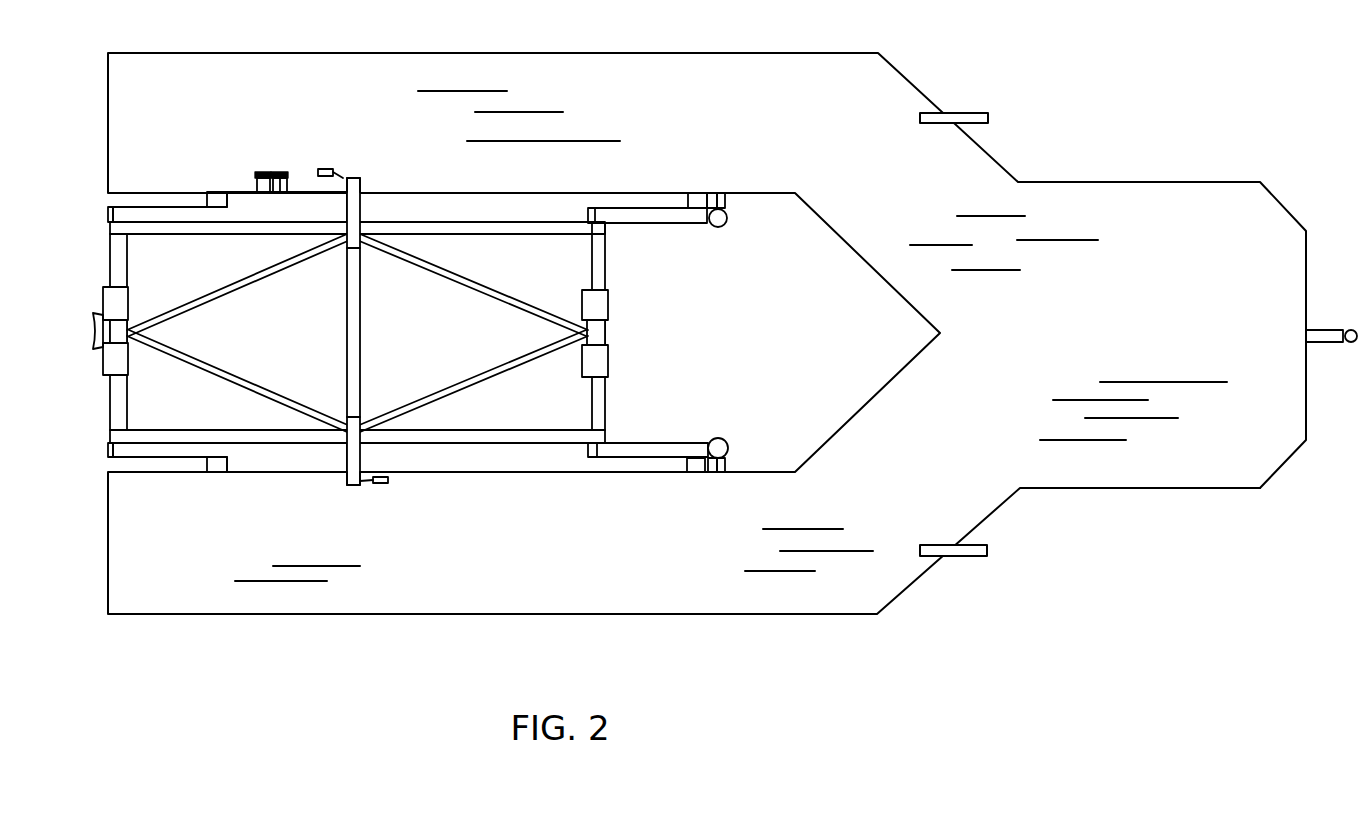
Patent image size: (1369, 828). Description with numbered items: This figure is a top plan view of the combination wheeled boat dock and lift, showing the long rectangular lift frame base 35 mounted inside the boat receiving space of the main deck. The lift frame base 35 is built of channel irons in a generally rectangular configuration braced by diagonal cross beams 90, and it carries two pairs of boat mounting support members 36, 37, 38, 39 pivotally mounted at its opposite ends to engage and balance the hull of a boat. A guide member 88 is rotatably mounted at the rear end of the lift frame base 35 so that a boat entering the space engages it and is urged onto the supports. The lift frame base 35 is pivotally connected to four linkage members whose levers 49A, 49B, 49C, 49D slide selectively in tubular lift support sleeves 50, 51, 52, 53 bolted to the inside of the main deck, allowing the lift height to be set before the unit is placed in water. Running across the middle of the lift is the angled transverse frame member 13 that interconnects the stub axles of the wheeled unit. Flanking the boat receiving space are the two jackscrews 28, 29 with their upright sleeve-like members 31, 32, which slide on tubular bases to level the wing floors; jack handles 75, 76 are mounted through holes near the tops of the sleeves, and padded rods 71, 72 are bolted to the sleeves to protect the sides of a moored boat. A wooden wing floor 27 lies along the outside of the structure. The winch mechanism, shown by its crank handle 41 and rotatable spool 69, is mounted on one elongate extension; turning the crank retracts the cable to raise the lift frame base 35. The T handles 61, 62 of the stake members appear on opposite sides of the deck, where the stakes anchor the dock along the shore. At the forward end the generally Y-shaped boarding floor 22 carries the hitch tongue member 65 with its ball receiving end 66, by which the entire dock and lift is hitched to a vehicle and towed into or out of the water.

The transverse frame member 13 is at (347, 323).
The Y-shaped floor 22 is at (1220, 460).
The wing floor 27 is at (497, 592).
The jackscrew 28 is at (343, 485).
The jackscrew 29 is at (367, 178).
The sleeve-like member 31 is at (362, 457).
The sleeve-like member 32 is at (362, 207).
The lift frame base 35 is at (357, 326).
The boat mounting support member 36 is at (103, 297).
The boat mounting support member 37 is at (103, 362).
The boat mounting support member 38 is at (610, 360).
The boat mounting support member 39 is at (610, 303).
The crank handle 41 is at (257, 175).
The lever 49A is at (108, 213).
The lever 49B is at (108, 446).
The lever 49C is at (655, 443).
The lever 49D is at (650, 223).
The lift support sleeve 50 is at (213, 192).
The lift support sleeve 51 is at (218, 472).
The lift support sleeve 52 is at (697, 472).
The lift support sleeve 53 is at (697, 193).
The T handle 61 is at (962, 113).
The T handle 62 is at (958, 557).
The tongue member 65 is at (1326, 330).
The ball receiving end 66 is at (1353, 343).
The rotatable spool 69 is at (283, 175).
The padded rod 71 is at (726, 225).
The padded rod 72 is at (729, 440).
The jack handle 75 is at (385, 486).
The jack handle 76 is at (340, 175).
The guide member 88 is at (95, 333).
The cross beam 90 is at (215, 290).